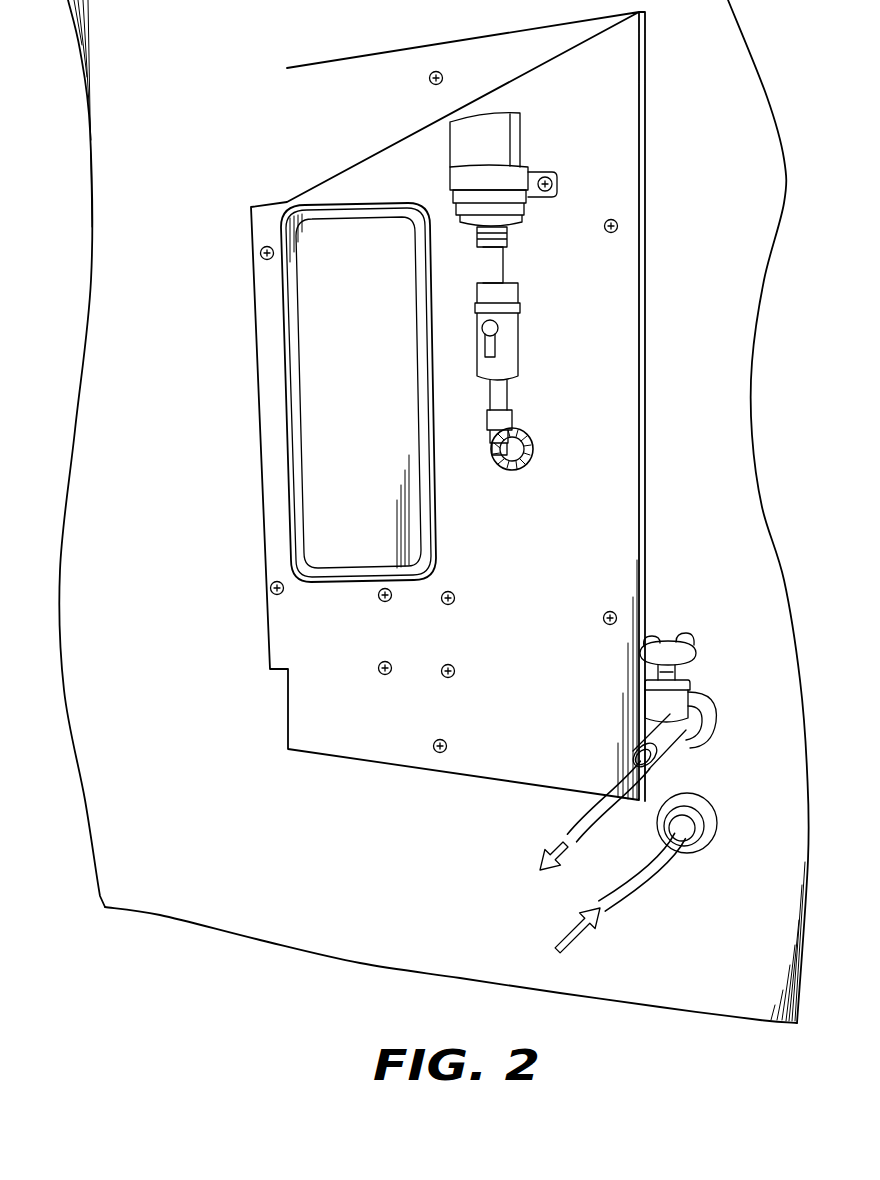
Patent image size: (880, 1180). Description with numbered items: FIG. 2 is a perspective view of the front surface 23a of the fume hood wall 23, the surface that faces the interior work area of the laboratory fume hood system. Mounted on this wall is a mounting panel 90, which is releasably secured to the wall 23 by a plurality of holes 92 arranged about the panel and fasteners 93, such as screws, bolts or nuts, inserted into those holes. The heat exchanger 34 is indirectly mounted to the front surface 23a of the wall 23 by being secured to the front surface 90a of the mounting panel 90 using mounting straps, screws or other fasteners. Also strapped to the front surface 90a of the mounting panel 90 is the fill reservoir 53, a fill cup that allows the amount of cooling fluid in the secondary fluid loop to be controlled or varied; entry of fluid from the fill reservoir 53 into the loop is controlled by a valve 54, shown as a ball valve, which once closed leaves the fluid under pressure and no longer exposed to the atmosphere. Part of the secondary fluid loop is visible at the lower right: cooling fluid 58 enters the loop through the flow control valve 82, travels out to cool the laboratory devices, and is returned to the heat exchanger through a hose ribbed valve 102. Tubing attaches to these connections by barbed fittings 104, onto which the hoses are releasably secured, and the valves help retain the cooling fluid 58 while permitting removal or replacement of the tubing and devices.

The wall 23 is at (181, 46).
The front surface 23a is at (713, 173).
The heat exchanger 34 is at (332, 242).
The fill reservoir 53 is at (502, 143).
The valve 54 is at (508, 323).
The cooling fluid 58 is at (553, 857).
The flow control valve 82 is at (673, 720).
The mounting panel 90 is at (630, 115).
The front surface of mounting panel 90a is at (547, 558).
The holes 92 is at (618, 227).
The fasteners 93 is at (606, 613).
The hose ribbed valve 102 is at (707, 827).
The barbed fittings 104 is at (653, 768).